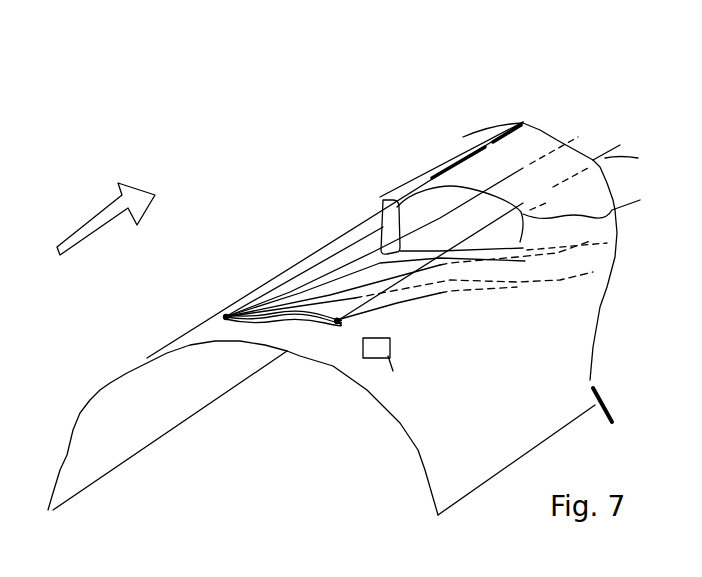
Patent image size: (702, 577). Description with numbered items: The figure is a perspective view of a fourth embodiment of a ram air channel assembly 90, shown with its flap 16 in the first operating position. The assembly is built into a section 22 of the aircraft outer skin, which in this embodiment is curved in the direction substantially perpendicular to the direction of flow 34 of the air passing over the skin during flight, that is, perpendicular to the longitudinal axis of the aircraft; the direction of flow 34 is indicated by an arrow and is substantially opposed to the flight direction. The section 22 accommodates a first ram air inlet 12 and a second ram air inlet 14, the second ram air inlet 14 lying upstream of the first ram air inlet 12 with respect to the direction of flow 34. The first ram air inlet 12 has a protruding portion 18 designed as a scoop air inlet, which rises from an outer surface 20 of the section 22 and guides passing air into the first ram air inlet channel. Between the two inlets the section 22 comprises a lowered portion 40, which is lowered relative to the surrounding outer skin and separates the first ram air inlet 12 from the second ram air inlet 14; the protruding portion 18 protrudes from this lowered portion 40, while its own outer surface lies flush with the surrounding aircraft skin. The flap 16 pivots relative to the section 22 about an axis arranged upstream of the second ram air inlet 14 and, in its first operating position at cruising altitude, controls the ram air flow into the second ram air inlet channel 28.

The first ram air inlet 12 is at (432, 210).
The second ram air inlet 14 is at (377, 276).
The flap 16 is at (337, 320).
The protruding portion 18 is at (597, 203).
The outer surface 20 is at (464, 464).
The section of the aircraft outer skin 22 is at (423, 470).
The second ram air inlet channel 28 is at (399, 365).
The direction of flow 34 is at (106, 213).
The lowered portion 40 is at (397, 260).
The ram air channel assembly 90 is at (335, 74).